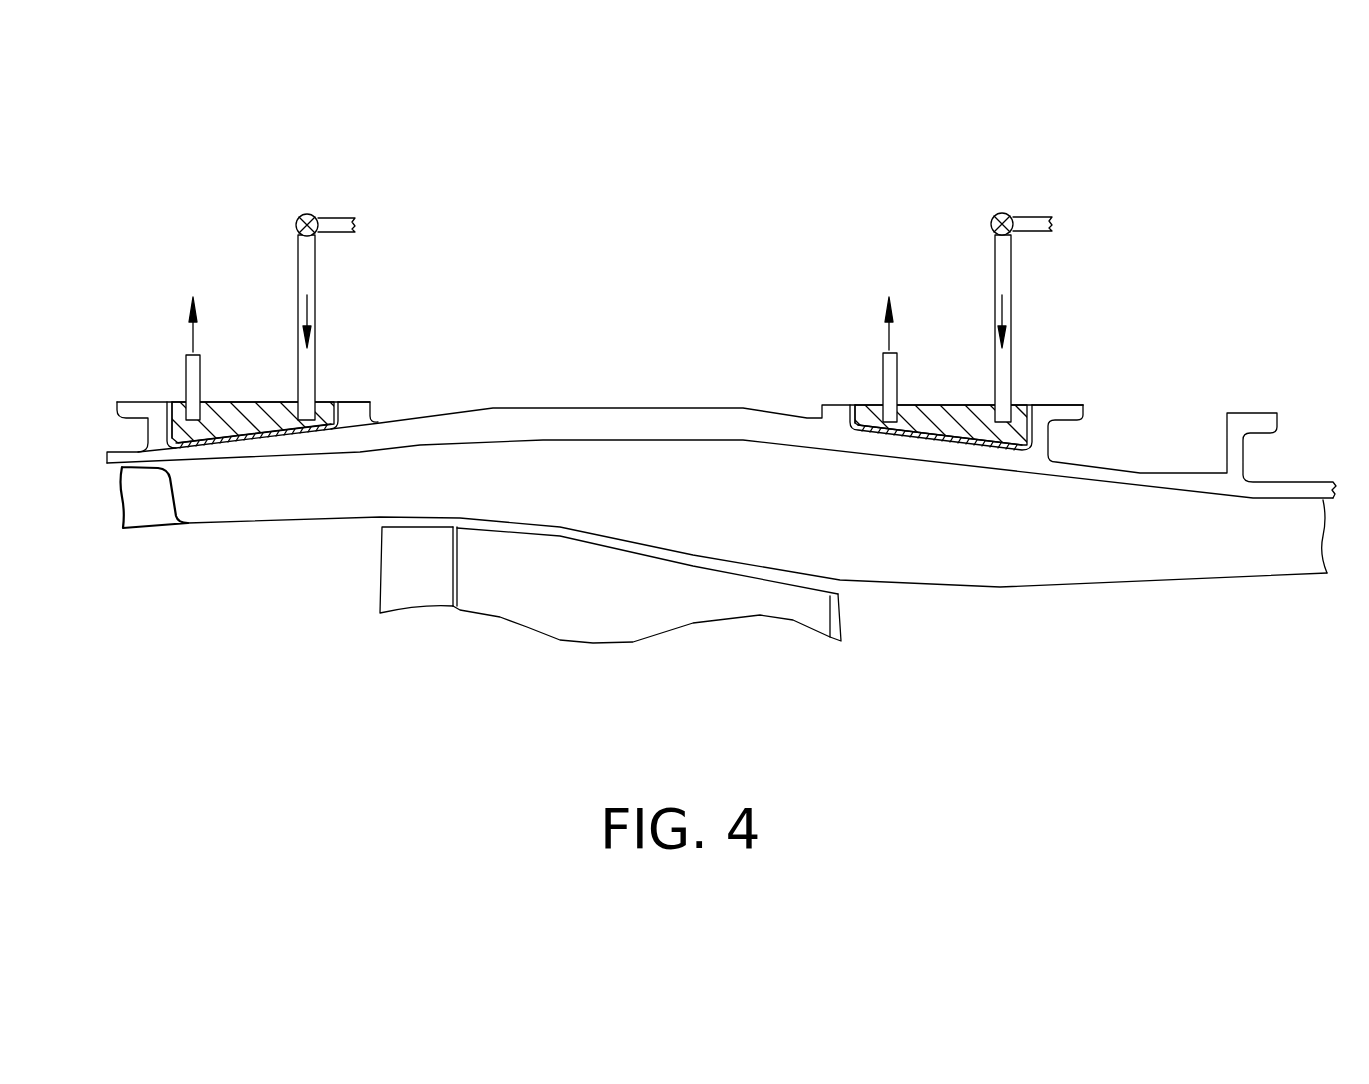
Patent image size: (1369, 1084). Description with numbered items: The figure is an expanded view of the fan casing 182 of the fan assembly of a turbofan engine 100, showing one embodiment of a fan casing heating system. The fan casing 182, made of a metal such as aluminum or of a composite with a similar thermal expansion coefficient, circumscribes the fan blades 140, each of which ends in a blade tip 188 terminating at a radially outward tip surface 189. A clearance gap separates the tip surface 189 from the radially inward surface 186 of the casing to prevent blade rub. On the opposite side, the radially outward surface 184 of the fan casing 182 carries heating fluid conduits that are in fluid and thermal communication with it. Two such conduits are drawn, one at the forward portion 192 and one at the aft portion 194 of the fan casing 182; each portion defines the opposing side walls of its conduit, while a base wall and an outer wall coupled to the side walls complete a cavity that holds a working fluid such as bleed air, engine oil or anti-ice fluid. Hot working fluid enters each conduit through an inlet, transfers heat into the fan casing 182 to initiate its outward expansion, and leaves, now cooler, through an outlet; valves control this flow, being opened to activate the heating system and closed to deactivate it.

The turbofan engine 100 is at (860, 602).
The fan blade 140 is at (510, 573).
The fan casing 182 is at (490, 422).
The radially outward surface 184 is at (1093, 460).
The radially inward surface 186 is at (1025, 588).
The blade tip 188 is at (396, 575).
The tip surface 189 is at (609, 553).
The forward portion 192 is at (356, 333).
The aft portion 194 is at (842, 358).